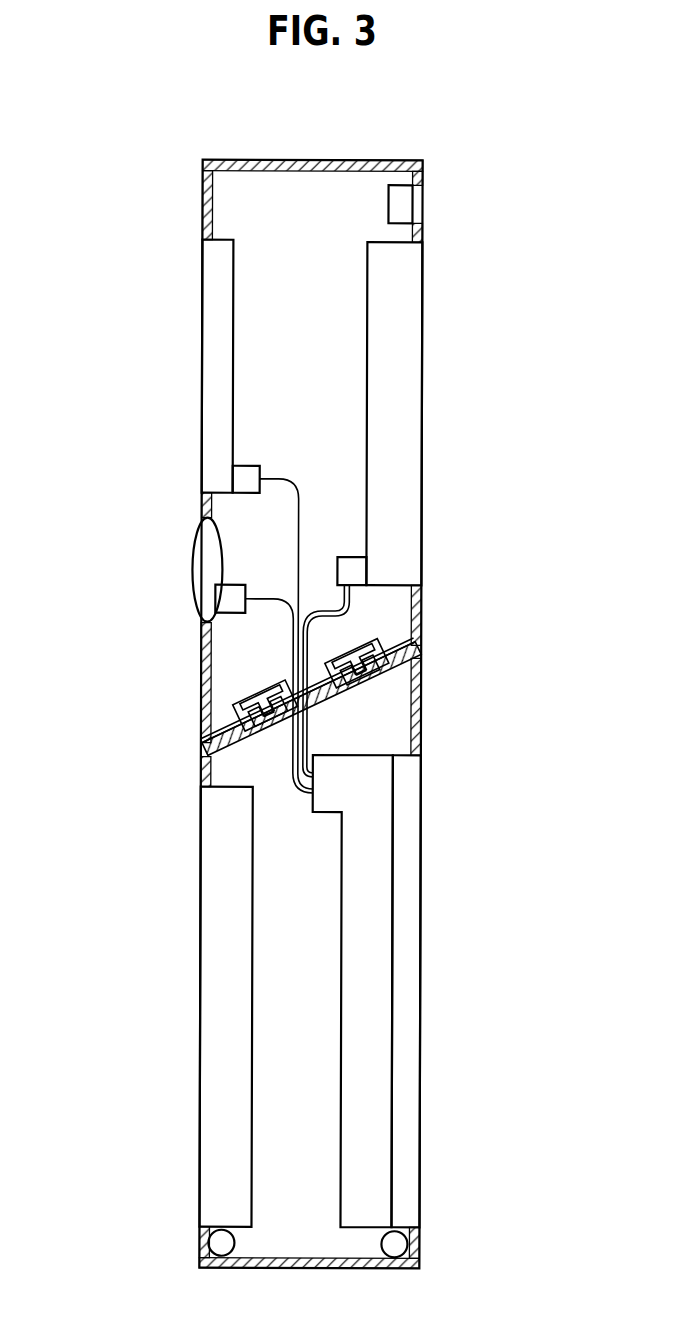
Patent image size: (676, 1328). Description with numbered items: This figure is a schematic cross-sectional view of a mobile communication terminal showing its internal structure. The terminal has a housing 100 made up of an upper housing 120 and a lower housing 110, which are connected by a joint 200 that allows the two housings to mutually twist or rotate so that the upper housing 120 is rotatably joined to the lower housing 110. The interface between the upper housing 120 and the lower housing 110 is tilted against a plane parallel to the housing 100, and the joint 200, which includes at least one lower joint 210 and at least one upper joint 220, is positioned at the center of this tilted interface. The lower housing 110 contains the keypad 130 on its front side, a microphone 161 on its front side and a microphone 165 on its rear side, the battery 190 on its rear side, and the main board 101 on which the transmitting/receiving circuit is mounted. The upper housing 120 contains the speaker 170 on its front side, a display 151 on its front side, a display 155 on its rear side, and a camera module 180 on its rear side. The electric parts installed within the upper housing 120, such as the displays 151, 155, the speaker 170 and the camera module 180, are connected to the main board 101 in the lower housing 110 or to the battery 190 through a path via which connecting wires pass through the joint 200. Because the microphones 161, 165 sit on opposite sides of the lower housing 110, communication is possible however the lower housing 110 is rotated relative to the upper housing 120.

The housing 100 is at (228, 714).
The lower housing 110 is at (208, 773).
The upper housing 120 is at (202, 694).
The keypad 130 is at (413, 979).
The display 151 is at (410, 340).
The display 155 is at (210, 338).
The microphone 161 is at (396, 1245).
The microphone 165 is at (223, 1243).
The speaker 170 is at (410, 205).
The camera module 180 is at (202, 551).
The battery 190 is at (212, 968).
The joint 200 is at (395, 666).
The lower joint 210 is at (365, 691).
The upper joint 220 is at (360, 644).
The main board 101 is at (383, 871).